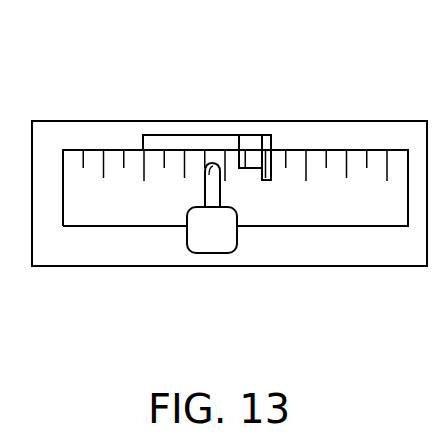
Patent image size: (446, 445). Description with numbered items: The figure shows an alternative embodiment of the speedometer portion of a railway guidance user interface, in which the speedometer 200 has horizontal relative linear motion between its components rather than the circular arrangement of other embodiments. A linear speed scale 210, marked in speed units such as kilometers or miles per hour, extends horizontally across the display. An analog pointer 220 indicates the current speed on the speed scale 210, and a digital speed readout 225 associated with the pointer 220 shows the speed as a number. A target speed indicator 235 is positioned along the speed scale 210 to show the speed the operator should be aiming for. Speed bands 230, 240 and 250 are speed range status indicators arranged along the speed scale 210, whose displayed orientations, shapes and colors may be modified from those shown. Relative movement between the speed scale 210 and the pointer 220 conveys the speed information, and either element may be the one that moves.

The speedometer display 200 is at (391, 284).
The speed scale 210 is at (66, 149).
The analog pointer 220 is at (207, 163).
The digital speed readout 225 is at (212, 253).
The speed band 230 is at (190, 143).
The target speed indicator 235 is at (143, 148).
The speed band 240 is at (252, 135).
The speed band 250 is at (270, 135).